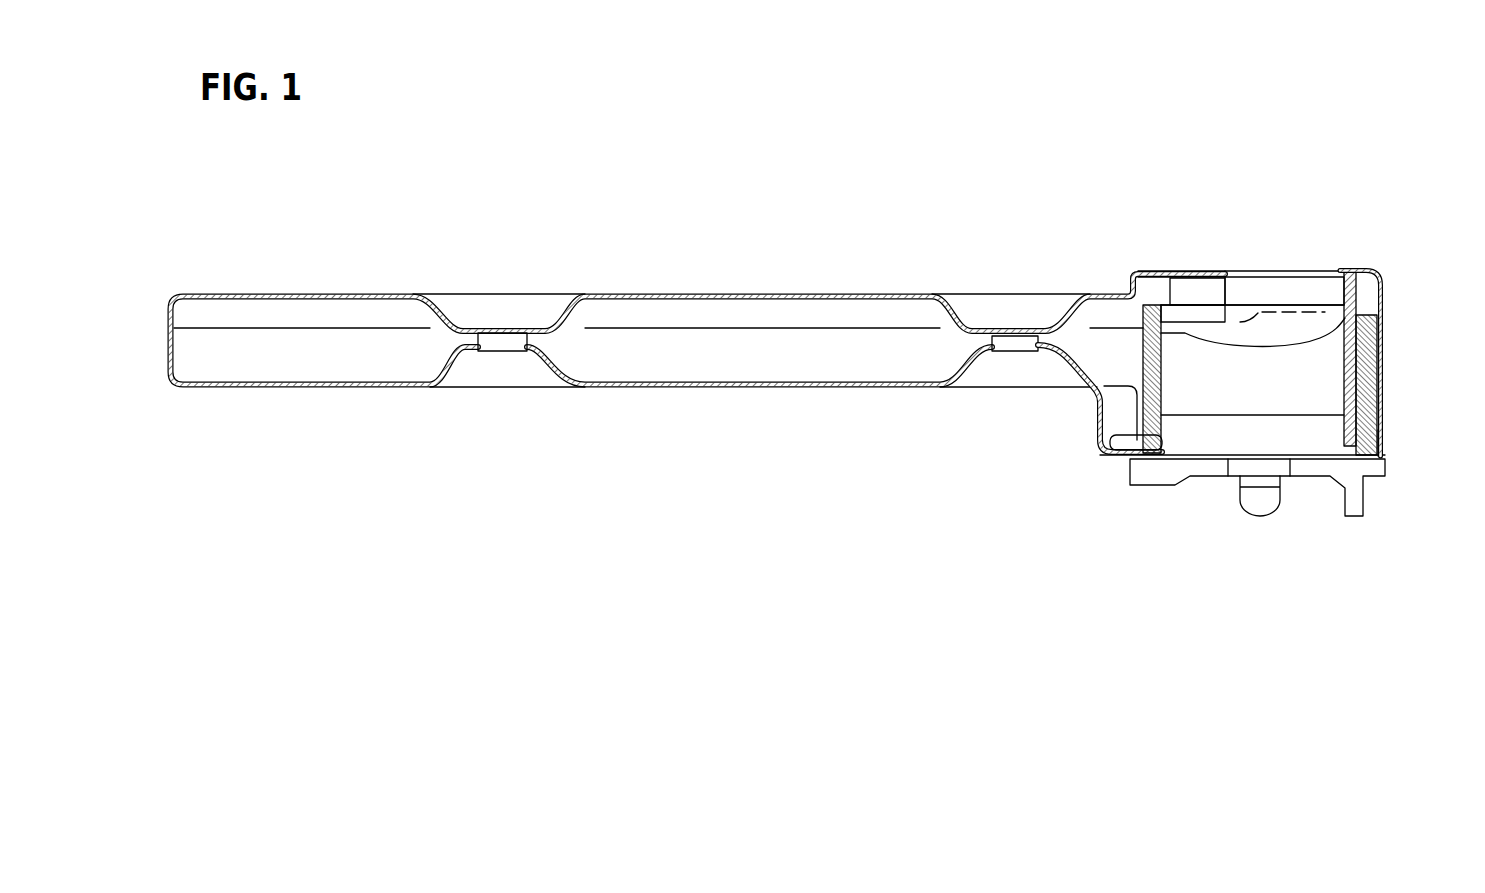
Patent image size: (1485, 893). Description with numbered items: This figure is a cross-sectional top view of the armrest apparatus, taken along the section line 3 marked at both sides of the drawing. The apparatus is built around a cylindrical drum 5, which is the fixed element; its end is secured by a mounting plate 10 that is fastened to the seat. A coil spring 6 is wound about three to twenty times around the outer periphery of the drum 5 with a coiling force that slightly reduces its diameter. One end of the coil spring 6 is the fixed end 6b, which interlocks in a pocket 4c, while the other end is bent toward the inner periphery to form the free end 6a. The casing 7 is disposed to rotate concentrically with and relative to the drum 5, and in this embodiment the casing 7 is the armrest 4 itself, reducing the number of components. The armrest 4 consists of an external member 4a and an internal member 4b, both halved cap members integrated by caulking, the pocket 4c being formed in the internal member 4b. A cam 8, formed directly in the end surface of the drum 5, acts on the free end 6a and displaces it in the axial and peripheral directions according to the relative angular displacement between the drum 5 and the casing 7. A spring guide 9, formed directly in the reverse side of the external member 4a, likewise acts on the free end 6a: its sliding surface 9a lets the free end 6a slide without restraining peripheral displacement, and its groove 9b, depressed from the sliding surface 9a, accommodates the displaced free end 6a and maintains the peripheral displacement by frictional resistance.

The section line III-III 3 is at (1115, 368).
The armrest 4 is at (881, 291).
The external member 4a is at (1385, 277).
The internal member 4b is at (1383, 431).
The pocket 4c is at (1113, 421).
The drum 5 is at (1318, 338).
The coil spring 6 is at (1163, 386).
The free end 6a is at (1162, 272).
The fixed end 6b is at (1128, 452).
The casing 7 is at (1368, 266).
The cam 8 is at (1277, 302).
The spring guide 9 is at (1189, 265).
The sliding surface 9a is at (1228, 277).
The groove 9b is at (1191, 313).
The mounting plate 10 is at (1360, 503).